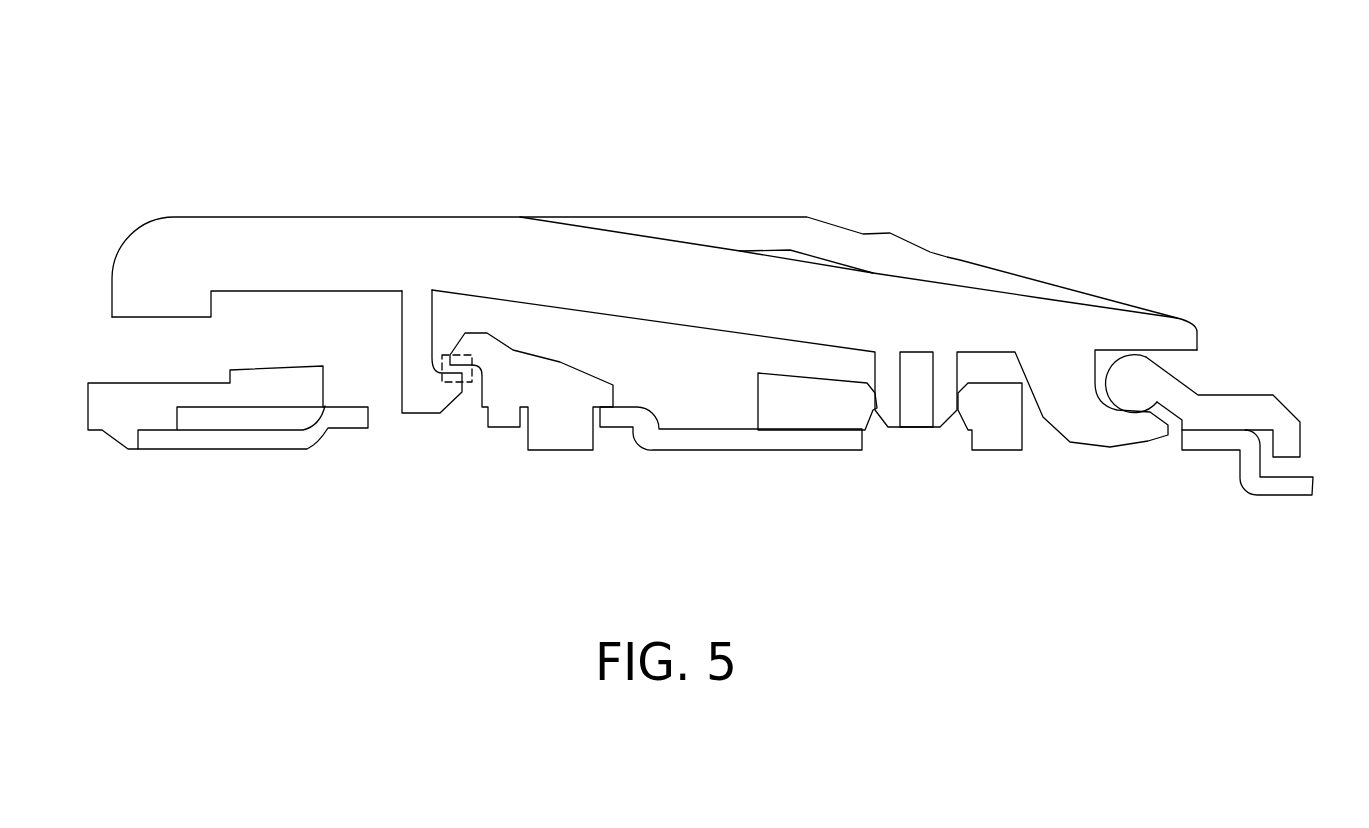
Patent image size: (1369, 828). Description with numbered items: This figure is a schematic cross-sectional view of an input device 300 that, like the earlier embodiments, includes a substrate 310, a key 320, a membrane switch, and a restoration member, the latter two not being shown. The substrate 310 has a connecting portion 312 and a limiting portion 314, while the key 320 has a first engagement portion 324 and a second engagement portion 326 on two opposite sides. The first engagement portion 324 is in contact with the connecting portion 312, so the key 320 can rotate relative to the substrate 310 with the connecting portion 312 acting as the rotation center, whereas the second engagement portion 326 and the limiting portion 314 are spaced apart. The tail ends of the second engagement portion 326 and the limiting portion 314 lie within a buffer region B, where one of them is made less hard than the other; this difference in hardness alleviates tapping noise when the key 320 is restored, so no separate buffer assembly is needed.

The input device 300 is at (1122, 158).
The substrate 310 is at (992, 100).
The connecting portion 312 is at (1125, 377).
The limiting portion 314 is at (565, 390).
The key 320 is at (465, 257).
The first engagement portion 324 is at (1065, 373).
The second engagement portion 326 is at (438, 392).
The buffer region B is at (442, 358).